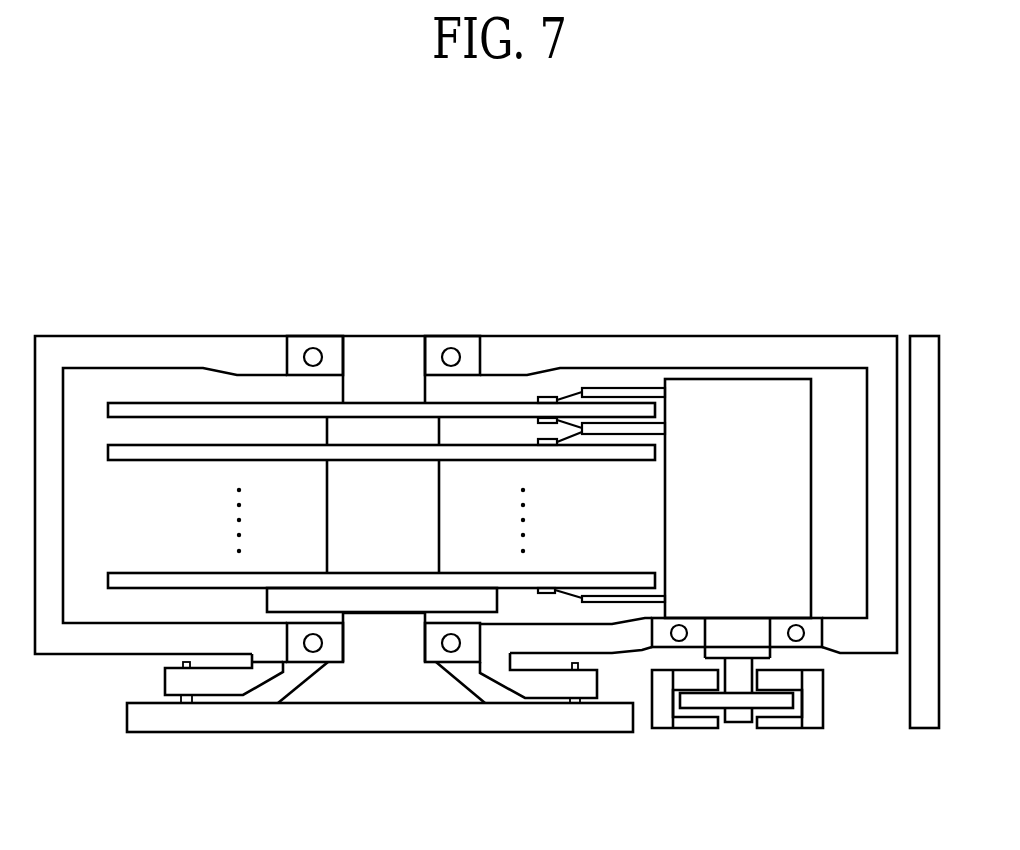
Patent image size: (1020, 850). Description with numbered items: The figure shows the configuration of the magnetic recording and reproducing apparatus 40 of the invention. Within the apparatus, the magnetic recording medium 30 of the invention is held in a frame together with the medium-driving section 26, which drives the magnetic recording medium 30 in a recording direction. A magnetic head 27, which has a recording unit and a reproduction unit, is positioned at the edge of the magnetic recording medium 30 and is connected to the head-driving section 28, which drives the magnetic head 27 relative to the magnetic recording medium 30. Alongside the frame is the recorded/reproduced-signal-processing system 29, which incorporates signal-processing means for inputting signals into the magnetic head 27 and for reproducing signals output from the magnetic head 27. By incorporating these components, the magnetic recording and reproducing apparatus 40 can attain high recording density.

The magnetic recording and reproducing apparatus 40 is at (446, 306).
The medium-driving section 26 is at (387, 637).
The magnetic head 27 is at (551, 400).
The head-driving section 28 is at (738, 403).
The recorded/reproduced-signal-processing system 29 is at (923, 713).
The magnetic recording medium 30 is at (155, 408).